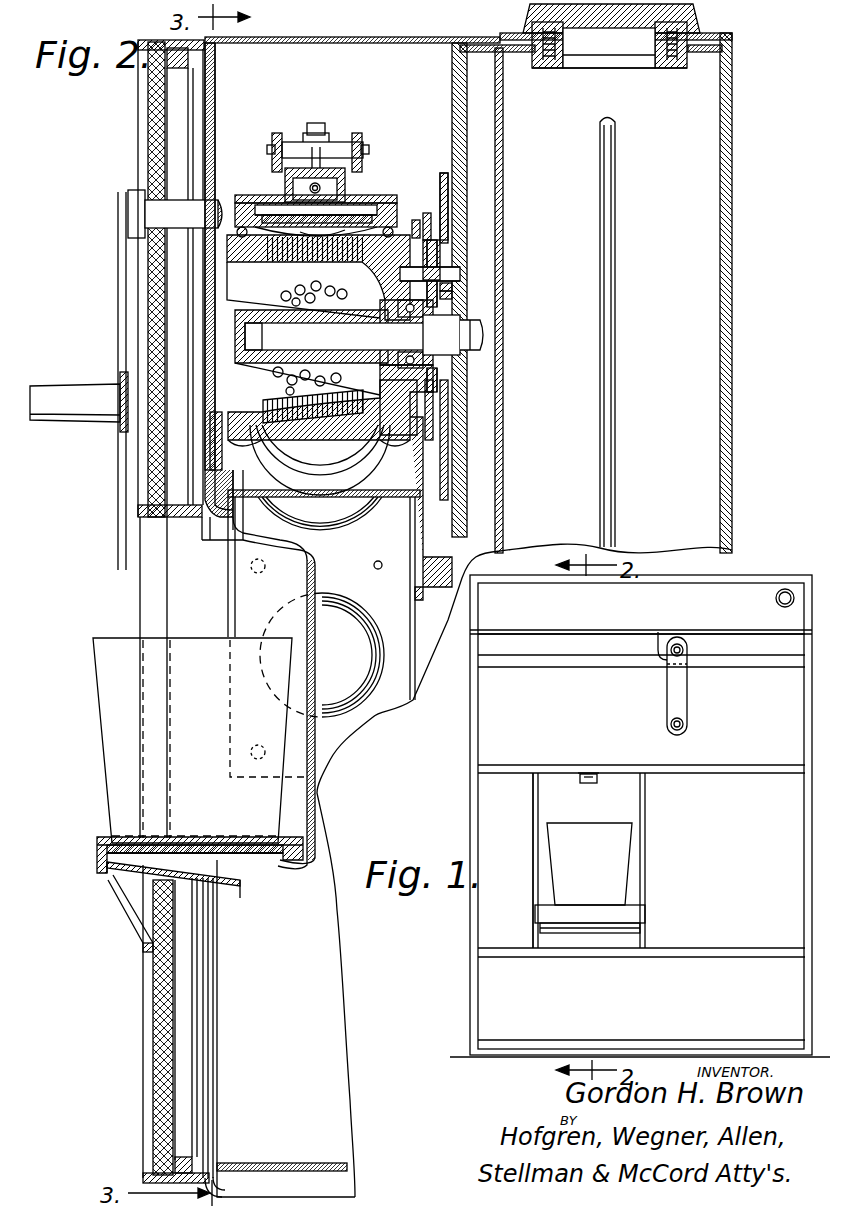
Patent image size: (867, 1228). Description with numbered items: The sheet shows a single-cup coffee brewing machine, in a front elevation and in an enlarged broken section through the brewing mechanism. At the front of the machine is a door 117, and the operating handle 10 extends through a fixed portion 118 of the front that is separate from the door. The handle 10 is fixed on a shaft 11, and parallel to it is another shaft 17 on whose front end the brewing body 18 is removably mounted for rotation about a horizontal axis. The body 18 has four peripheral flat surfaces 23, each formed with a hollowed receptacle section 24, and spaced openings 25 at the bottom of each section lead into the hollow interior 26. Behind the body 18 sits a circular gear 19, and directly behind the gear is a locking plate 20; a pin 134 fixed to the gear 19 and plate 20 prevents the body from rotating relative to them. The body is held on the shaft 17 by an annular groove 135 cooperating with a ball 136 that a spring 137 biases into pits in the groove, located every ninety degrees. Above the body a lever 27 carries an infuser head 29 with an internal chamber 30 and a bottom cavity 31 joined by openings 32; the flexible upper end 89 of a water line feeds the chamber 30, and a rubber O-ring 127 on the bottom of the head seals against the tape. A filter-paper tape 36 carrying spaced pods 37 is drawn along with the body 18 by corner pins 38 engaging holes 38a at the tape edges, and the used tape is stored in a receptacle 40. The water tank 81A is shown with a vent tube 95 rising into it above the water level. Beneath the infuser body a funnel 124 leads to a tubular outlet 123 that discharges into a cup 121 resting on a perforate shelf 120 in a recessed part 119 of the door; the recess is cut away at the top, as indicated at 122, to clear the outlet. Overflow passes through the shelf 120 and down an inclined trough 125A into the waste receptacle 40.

In FIG. 2, the operating handle 10 is at (126, 295).
In FIG. 1, the operating handle 10 is at (672, 703).
In FIG. 2, the shaft 11 is at (160, 208).
In FIG. 2, the shaft 17 is at (275, 335).
In FIG. 2, the brewing body 18 is at (415, 232).
In FIG. 2, the circular gear 19 is at (427, 215).
In FIG. 2, the locking plate 20 is at (443, 176).
In FIG. 2, the peripheral flat surfaces 23 is at (238, 445).
In FIG. 2, the receptacle section 24 is at (258, 268).
In FIG. 2, the spaced openings 25 is at (318, 238).
In FIG. 2, the hollow interior 26 is at (268, 302).
In FIG. 2, the lever 27 is at (339, 140).
In FIG. 2, the infuser head 29 is at (246, 195).
In FIG. 2, the internal chamber 30 is at (365, 205).
In FIG. 2, the bottom cavity 31 is at (275, 215).
In FIG. 2, the openings 32 is at (340, 215).
In FIG. 2, the tape 36 is at (394, 599).
In FIG. 2, the pods 37 is at (332, 520).
In FIG. 2, the corner pins 38 is at (388, 442).
In FIG. 2, the holes 38a is at (378, 558).
In FIG. 2, the receptacle 40 is at (300, 1006).
In FIG. 2, the water tank 81A is at (500, 218).
In FIG. 2, the flexible upper end 89 is at (322, 188).
In FIG. 2, the vent tube 95 is at (613, 314).
In FIG. 1, the door 117 is at (565, 713).
In FIG. 2, the fixed portion 118 is at (162, 132).
In FIG. 1, the fixed portion 118 is at (748, 661).
In FIG. 2, the recessed part 119 is at (313, 578).
In FIG. 1, the recessed part 119 is at (622, 815).
In FIG. 2, the perforate shelf 120 is at (263, 855).
In FIG. 1, the perforate shelf 120 is at (560, 916).
In FIG. 2, the cup 121 is at (114, 770).
In FIG. 1, the cup 121 is at (604, 866).
In FIG. 2, the cut away 122 is at (259, 573).
In FIG. 1, the cut away 122 is at (600, 780).
In FIG. 2, the tubular outlet 123 is at (204, 530).
In FIG. 1, the tubular outlet 123 is at (582, 780).
In FIG. 2, the funnel 124 is at (342, 490).
In FIG. 2, the inclined trough 125A is at (245, 882).
In FIG. 2, the rubber O-ring 127 is at (236, 232).
In FIG. 2, the pin 134 is at (458, 268).
In FIG. 2, the annular groove 135 is at (460, 288).
In FIG. 2, the ball 136 is at (460, 297).
In FIG. 2, the spring 137 is at (400, 320).